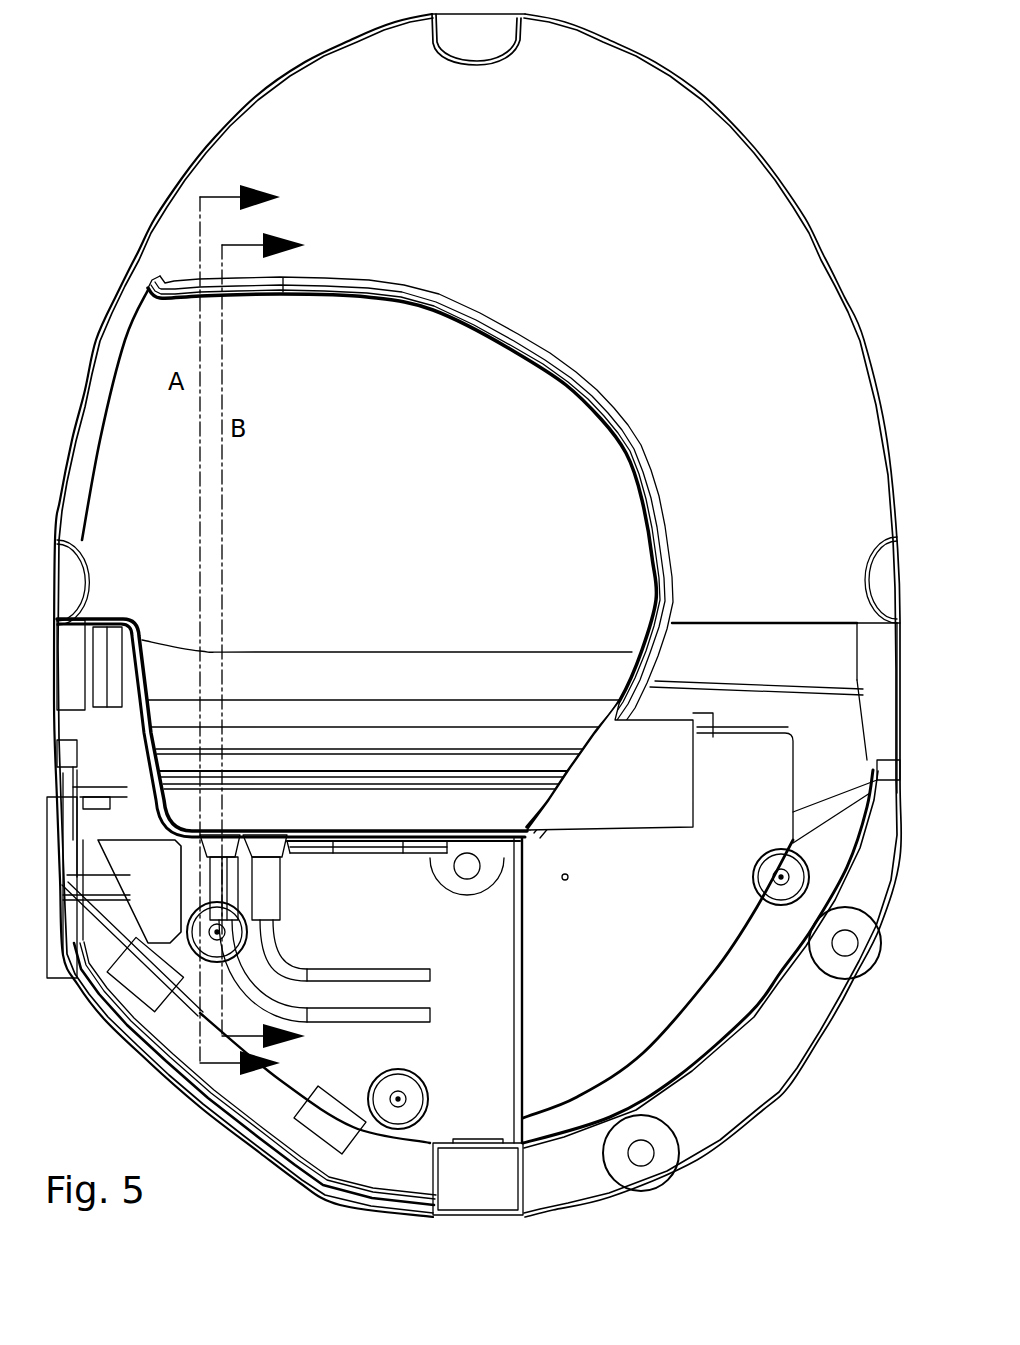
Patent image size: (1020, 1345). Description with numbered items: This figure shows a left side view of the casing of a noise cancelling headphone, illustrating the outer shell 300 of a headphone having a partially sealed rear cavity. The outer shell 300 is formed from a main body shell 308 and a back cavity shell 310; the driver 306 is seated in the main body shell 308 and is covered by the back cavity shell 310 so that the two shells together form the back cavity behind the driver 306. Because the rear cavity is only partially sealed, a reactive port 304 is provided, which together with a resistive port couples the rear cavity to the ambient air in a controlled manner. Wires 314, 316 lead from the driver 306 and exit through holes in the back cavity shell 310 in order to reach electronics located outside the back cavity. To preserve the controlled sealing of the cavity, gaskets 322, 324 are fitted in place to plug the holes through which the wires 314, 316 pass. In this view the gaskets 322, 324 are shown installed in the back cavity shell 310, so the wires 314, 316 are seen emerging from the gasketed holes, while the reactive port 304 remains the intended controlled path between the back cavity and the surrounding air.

The outer shell 300 is at (778, 142).
The reactive port 304 is at (387, 876).
The driver 306 is at (708, 787).
The main body shell 308 is at (568, 194).
The back cavity shell 310 is at (442, 435).
The wire 314 is at (398, 974).
The wire 316 is at (400, 1023).
The gasket 322 is at (270, 893).
The gasket 324 is at (229, 840).